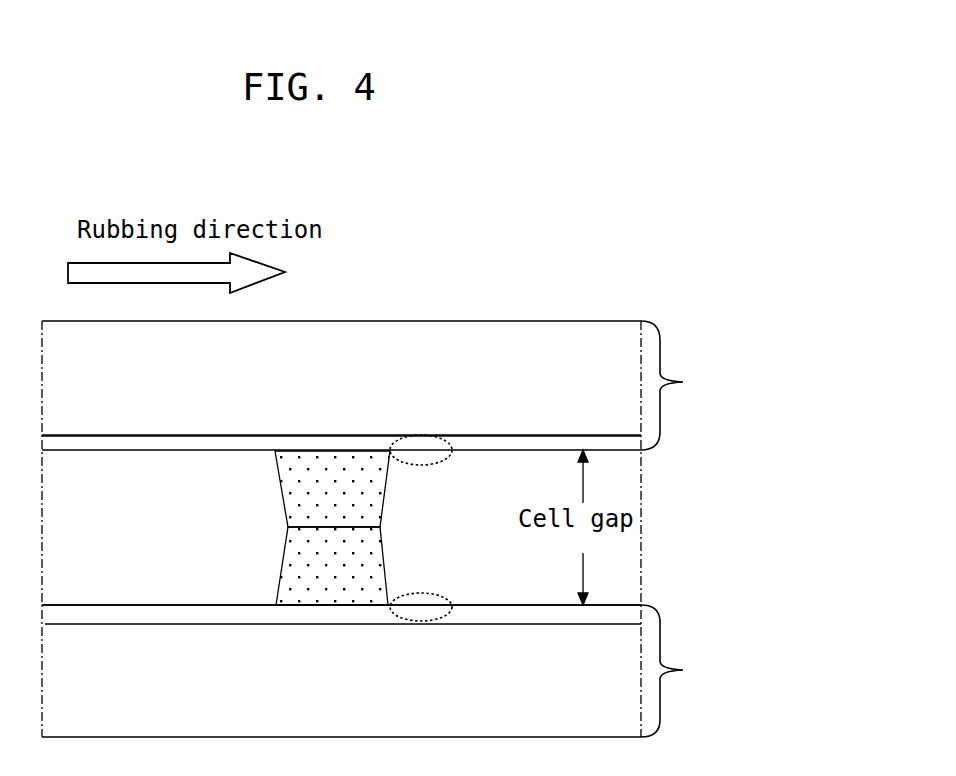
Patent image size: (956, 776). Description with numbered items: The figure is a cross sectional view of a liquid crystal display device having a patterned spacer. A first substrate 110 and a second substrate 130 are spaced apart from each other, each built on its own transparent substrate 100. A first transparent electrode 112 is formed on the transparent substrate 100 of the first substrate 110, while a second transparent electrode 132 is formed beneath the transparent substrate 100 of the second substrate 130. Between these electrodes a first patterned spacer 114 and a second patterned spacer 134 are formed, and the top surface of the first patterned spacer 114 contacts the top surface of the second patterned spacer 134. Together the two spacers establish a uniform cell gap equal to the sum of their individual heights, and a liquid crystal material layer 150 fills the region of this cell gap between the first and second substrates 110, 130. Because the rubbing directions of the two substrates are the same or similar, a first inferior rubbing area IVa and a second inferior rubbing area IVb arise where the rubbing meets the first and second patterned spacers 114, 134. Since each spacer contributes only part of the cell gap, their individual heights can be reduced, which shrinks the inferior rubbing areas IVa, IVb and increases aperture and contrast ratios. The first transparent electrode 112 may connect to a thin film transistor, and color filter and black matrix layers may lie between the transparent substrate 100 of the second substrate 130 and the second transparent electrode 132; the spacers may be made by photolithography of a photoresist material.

The transparent substrate 100 is at (352, 383).
The first substrate 110 is at (383, 671).
The first transparent electrode 112 is at (120, 613).
The first patterned spacer 114 is at (292, 570).
The second substrate 130 is at (383, 385).
The second transparent electrode 132 is at (130, 443).
The second patterned spacer 134 is at (292, 486).
The liquid crystal material layer 150 is at (625, 538).
The first inferior rubbing area IVa is at (433, 618).
The second inferior rubbing area IVb is at (427, 462).